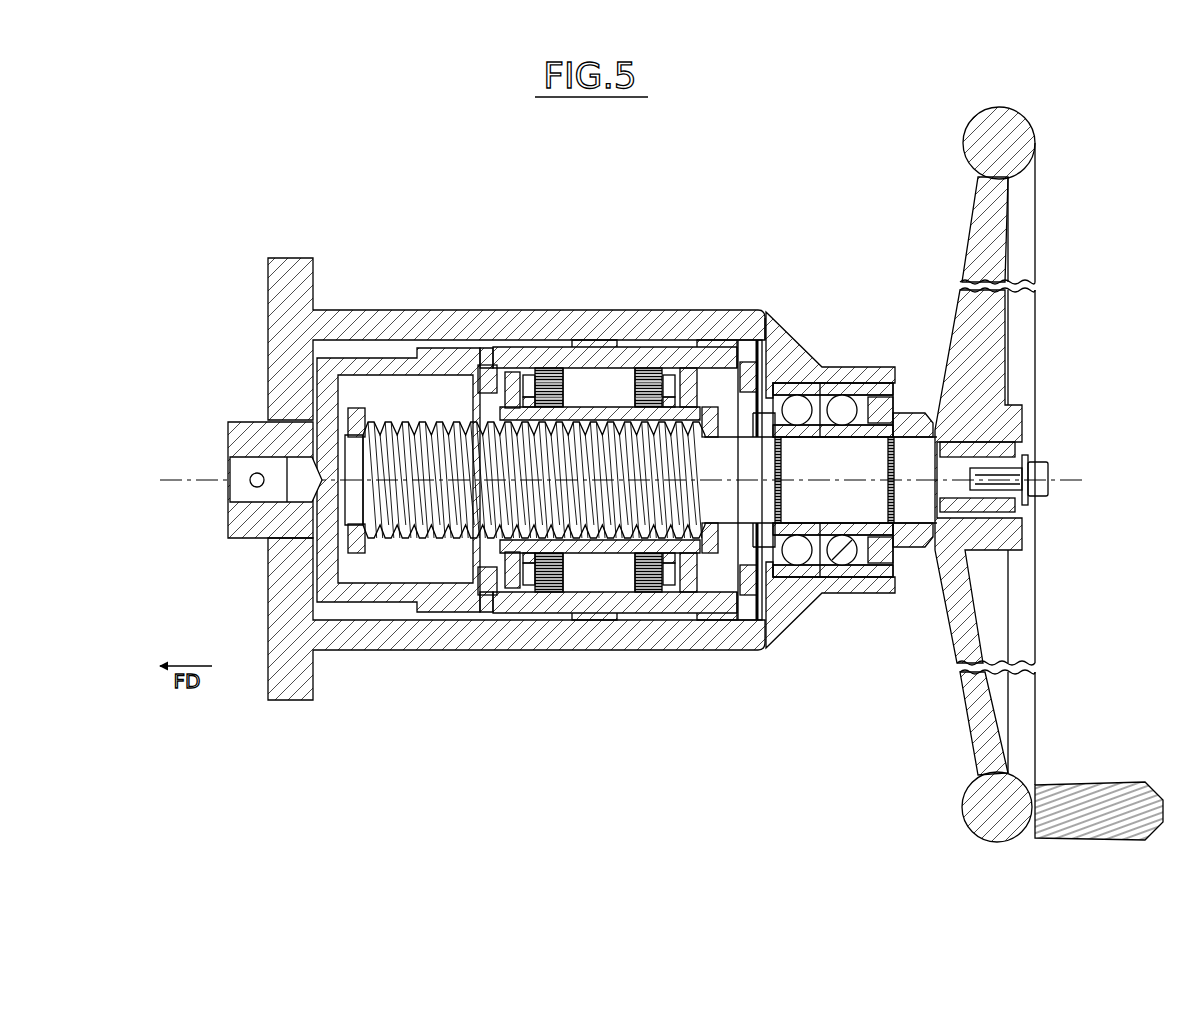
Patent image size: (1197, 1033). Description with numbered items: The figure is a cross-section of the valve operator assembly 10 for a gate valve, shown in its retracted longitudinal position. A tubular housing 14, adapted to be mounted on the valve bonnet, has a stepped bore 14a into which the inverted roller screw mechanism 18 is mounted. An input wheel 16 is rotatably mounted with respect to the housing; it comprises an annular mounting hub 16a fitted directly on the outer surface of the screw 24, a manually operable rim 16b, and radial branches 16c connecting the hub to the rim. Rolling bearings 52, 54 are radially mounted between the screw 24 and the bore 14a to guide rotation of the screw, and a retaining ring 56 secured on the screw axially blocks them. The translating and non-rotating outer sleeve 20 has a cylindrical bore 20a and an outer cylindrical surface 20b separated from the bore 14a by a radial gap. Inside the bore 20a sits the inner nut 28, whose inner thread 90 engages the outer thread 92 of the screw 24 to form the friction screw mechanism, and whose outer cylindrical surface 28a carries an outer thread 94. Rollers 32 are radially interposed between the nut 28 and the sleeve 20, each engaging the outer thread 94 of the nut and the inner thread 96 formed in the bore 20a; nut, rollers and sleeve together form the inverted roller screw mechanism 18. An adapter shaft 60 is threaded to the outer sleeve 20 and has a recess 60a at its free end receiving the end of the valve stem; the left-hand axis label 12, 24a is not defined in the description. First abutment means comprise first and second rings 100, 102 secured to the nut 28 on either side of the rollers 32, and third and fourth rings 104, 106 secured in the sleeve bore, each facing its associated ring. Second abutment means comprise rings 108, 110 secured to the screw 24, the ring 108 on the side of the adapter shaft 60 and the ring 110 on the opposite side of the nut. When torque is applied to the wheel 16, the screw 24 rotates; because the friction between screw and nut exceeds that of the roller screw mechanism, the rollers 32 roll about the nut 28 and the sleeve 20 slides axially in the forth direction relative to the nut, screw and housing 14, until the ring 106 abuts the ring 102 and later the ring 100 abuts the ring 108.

The valve operator assembly 10 is at (700, 217).
The steering shaft 12 is at (173, 480).
The end portion of screw shaft 24a is at (218, 457).
The tubular housing 14 is at (425, 307).
The bore of the housing 14a is at (780, 330).
The input operable wheel 16 is at (1040, 125).
The annular mounting hub 16a is at (1003, 534).
The operable rim 16b is at (1024, 384).
The radial arms or branches 16c is at (962, 348).
The inverted roller screw mechanism 18 is at (703, 566).
The outer sleeve 20 is at (562, 615).
The cylindrical bore of the outer sleeve 20a is at (494, 370).
The outer cylindrical surface of the outer sleeve 20b is at (747, 365).
The screw 24 is at (735, 497).
The inner nut 28 is at (612, 400).
The outer cylindrical surface of the nut 28a is at (660, 368).
The rollers 32 is at (608, 582).
The rolling bearing 52 is at (800, 578).
The rolling bearing 54 is at (862, 578).
The retaining ring 56 is at (912, 548).
The adapter shaft 60 is at (368, 355).
The recess 60a is at (230, 488).
The inner thread of the nut 90 is at (545, 405).
The outer thread of the screw 92 is at (415, 537).
The outer thread of the nut 94 is at (620, 395).
The inner thread of the sleeve 96 is at (575, 370).
The first ring 100 is at (512, 588).
The second ring 102 is at (686, 593).
The third ring 104 is at (487, 596).
The fourth ring 106 is at (750, 596).
The first ring of the second abutment means 108 is at (355, 553).
The second ring of the second abutment means 110 is at (718, 548).